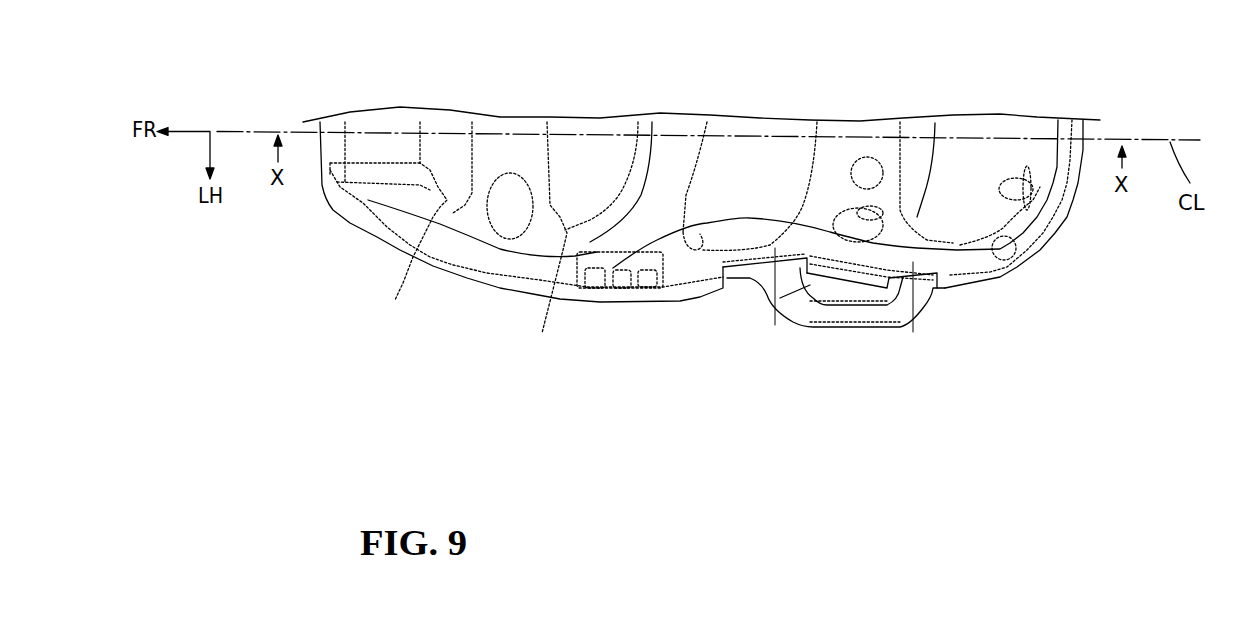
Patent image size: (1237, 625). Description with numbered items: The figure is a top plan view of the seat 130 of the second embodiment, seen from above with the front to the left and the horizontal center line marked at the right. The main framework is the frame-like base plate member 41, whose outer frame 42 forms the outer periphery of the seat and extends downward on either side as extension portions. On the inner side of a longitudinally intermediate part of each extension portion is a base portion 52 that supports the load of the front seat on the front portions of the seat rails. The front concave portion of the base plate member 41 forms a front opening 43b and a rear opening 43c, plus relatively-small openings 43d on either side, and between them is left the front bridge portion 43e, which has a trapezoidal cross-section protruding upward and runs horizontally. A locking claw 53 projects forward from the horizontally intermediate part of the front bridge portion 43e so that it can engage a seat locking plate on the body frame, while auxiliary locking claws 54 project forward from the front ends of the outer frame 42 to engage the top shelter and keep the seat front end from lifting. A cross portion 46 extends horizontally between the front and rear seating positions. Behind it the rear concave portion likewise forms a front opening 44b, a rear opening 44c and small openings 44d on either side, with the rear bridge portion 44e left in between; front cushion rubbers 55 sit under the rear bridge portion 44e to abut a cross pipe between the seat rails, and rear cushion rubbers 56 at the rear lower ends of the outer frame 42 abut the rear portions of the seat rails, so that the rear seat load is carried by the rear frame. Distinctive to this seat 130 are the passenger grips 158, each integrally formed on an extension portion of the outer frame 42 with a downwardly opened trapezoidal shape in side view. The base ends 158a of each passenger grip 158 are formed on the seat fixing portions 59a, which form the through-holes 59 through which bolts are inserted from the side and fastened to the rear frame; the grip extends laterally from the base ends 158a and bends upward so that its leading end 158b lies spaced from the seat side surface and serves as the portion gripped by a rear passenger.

The seat 130 is at (322, 266).
The base plate member 41 is at (521, 256).
The outer frame 42 is at (452, 273).
The front opening 43b is at (428, 222).
The rear opening 43c is at (547, 241).
The relatively-small opening 43d is at (500, 240).
The front bridge portion 43e is at (530, 148).
The front opening 44b is at (697, 253).
The rear opening 44c is at (1043, 193).
The relatively-small opening 44d is at (903, 210).
The rear bridge portion 44e is at (817, 187).
The cross portion 46 is at (693, 150).
The base portion 52 is at (602, 297).
The locking claw 53 is at (367, 205).
The auxiliary locking claw 54 is at (330, 190).
The front cushion rubber 55 is at (866, 163).
The rear cushion rubber 56 is at (1032, 258).
The through-hole 59 is at (848, 339).
The seat fixing portion 59a is at (770, 265).
The passenger grip 158 is at (832, 364).
The base end 158a is at (758, 287).
The leading end 158b is at (880, 320).